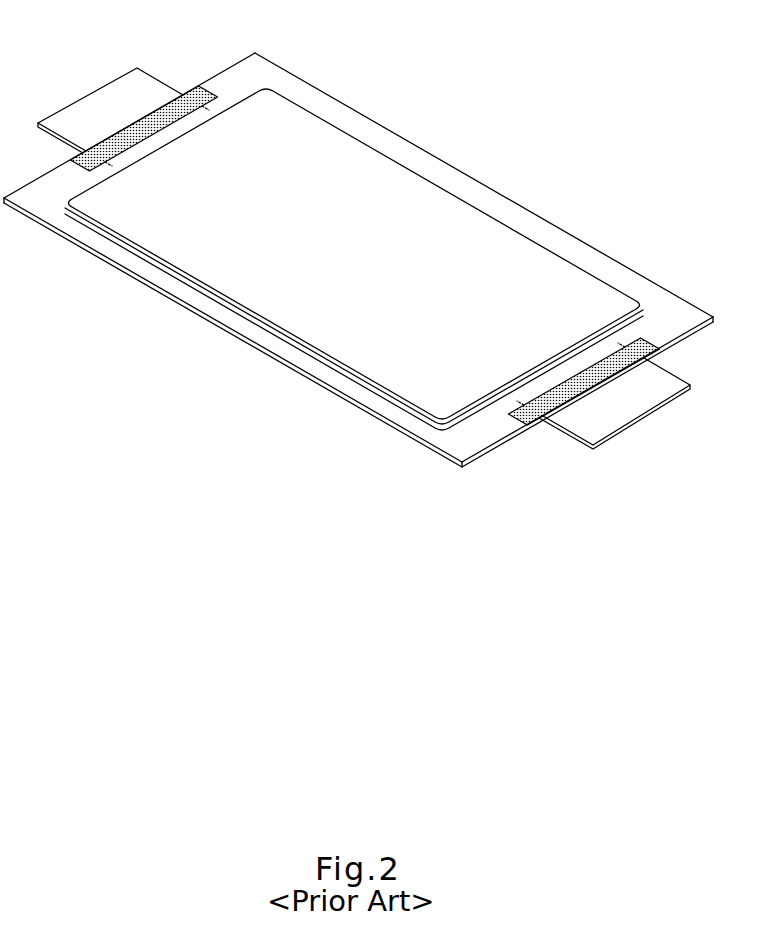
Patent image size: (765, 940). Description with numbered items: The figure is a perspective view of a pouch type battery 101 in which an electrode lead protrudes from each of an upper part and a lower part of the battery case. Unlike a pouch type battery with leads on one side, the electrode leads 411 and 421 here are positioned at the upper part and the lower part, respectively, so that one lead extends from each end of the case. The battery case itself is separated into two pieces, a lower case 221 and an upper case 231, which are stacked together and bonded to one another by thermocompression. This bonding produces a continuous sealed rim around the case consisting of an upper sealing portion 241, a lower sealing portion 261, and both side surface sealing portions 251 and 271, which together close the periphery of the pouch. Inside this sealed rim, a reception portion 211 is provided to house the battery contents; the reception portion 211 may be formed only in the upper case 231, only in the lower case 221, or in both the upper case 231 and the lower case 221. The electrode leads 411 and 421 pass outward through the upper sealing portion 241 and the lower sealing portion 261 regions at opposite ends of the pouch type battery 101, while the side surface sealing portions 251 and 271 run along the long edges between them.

The pouch type battery 101 is at (358, 250).
The reception portion 211 is at (415, 192).
The lower case 221 is at (228, 337).
The upper case 231 is at (200, 305).
The upper sealing portion 241 is at (490, 437).
The side surface sealing portion 251 is at (365, 402).
The lower sealing portion 261 is at (233, 70).
The side surface sealing portion 271 is at (505, 202).
The electrode lead 411 is at (635, 410).
The electrode lead 421 is at (90, 100).